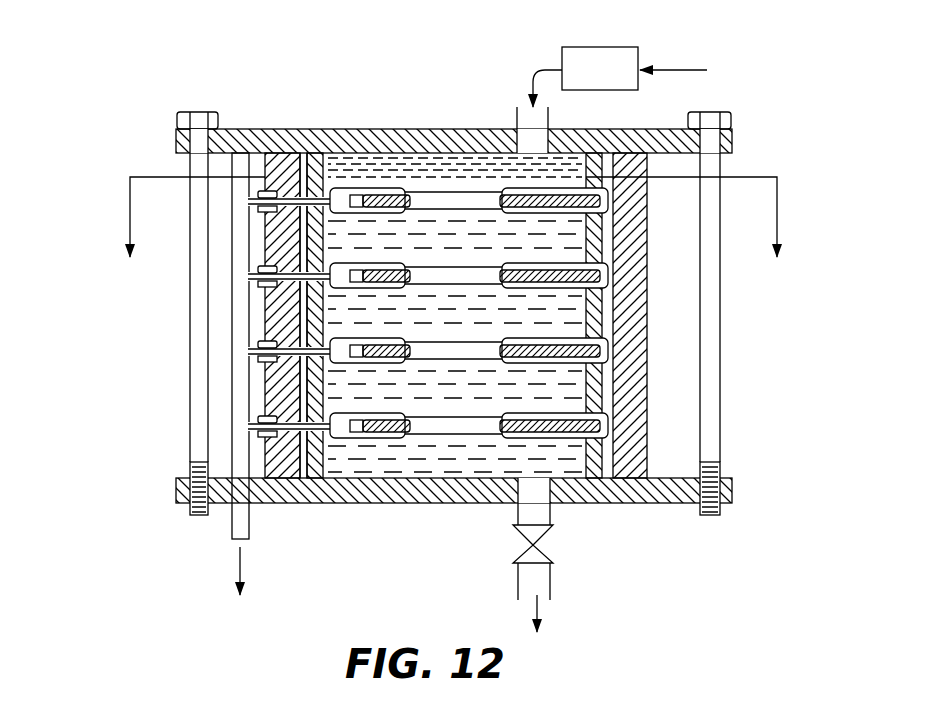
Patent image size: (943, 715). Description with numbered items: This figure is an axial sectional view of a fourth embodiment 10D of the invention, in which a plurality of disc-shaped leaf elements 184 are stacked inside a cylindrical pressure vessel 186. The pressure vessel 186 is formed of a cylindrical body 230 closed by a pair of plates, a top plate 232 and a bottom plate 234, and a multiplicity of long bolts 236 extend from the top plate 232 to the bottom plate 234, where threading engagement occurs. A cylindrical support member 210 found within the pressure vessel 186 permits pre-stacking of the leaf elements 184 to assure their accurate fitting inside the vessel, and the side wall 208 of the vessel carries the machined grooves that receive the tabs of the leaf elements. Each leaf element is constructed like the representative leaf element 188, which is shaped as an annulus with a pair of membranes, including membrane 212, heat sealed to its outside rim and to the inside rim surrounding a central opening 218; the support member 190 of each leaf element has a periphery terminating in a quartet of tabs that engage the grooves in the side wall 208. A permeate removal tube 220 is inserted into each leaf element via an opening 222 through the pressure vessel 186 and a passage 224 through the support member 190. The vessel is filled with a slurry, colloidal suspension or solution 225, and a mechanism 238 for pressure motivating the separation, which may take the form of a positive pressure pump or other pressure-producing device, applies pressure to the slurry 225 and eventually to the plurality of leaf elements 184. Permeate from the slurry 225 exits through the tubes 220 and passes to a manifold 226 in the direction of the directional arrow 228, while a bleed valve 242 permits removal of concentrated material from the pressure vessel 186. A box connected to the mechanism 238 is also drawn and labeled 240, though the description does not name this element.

The fourth embodiment 10D is at (427, 323).
The pressure vessel 186 is at (268, 128).
The top plate 232 is at (618, 130).
The bottom plate 234 is at (470, 508).
The mechanism for pressure motivating separation 238 is at (530, 68).
The fluid supply 240 is at (618, 55).
The bleed valve 242 is at (545, 548).
The long bolts 236 is at (197, 423).
The cylindrical body 230 is at (265, 285).
The cylindrical support member 210 is at (570, 410).
The membrane 212 is at (570, 443).
The side wall 208 is at (318, 478).
The manifold 226 is at (232, 527).
The directional arrow 228 is at (243, 568).
The disc-shaped leaf elements 184 is at (446, 183).
The slurry 225 is at (397, 460).
The permeate removal tube 220 is at (250, 347).
The opening 222 is at (284, 210).
The leaf element 188 is at (378, 185).
The opening 218 is at (497, 418).
The passage 224 is at (330, 193).
The support member 190 is at (608, 200).